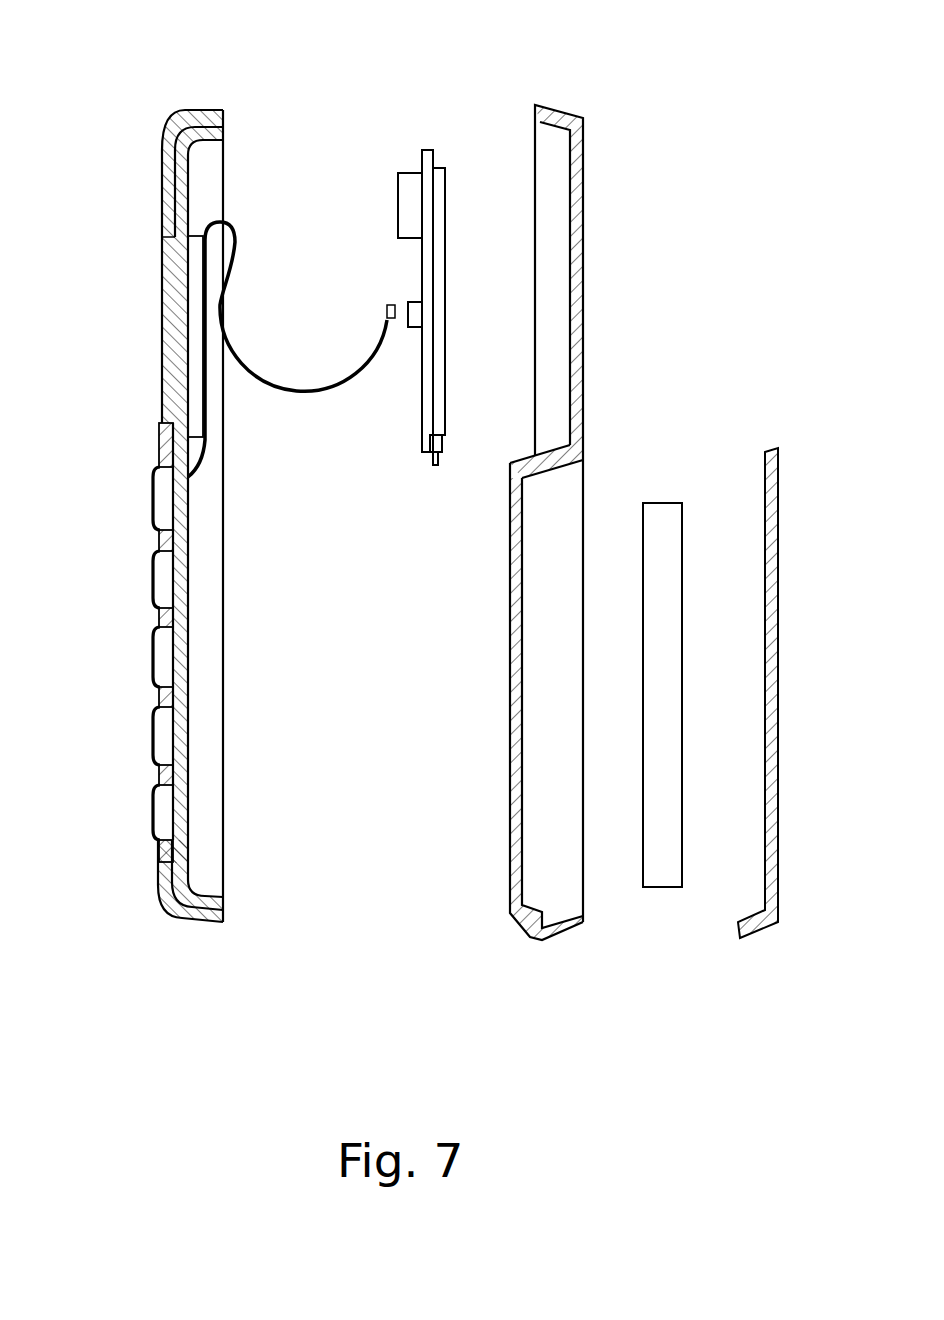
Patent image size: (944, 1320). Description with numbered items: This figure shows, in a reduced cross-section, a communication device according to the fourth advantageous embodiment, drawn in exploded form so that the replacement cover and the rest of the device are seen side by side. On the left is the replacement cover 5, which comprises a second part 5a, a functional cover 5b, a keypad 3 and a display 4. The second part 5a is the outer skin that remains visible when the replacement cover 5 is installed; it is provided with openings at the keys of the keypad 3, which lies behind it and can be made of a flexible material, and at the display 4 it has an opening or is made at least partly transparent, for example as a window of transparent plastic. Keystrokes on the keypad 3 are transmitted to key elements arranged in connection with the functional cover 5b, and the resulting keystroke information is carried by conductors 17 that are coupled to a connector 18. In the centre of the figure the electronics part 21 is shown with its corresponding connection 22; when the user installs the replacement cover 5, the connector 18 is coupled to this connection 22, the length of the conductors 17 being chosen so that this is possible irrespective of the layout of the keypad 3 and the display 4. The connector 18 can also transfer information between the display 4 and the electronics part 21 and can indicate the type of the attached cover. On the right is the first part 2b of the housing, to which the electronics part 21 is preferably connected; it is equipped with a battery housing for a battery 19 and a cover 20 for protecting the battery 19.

The replacement cover 5 is at (202, 466).
The second part 5a is at (160, 163).
The functional cover 5b is at (223, 131).
The keypad 3 is at (133, 847).
The display 4 is at (192, 400).
The conductors 17 is at (306, 394).
The connector 18 is at (387, 308).
The electronics part 21 is at (427, 170).
The connection 22 is at (408, 303).
The first part of the housing 2b is at (584, 243).
The battery 19 is at (657, 500).
The cover 20 is at (779, 545).